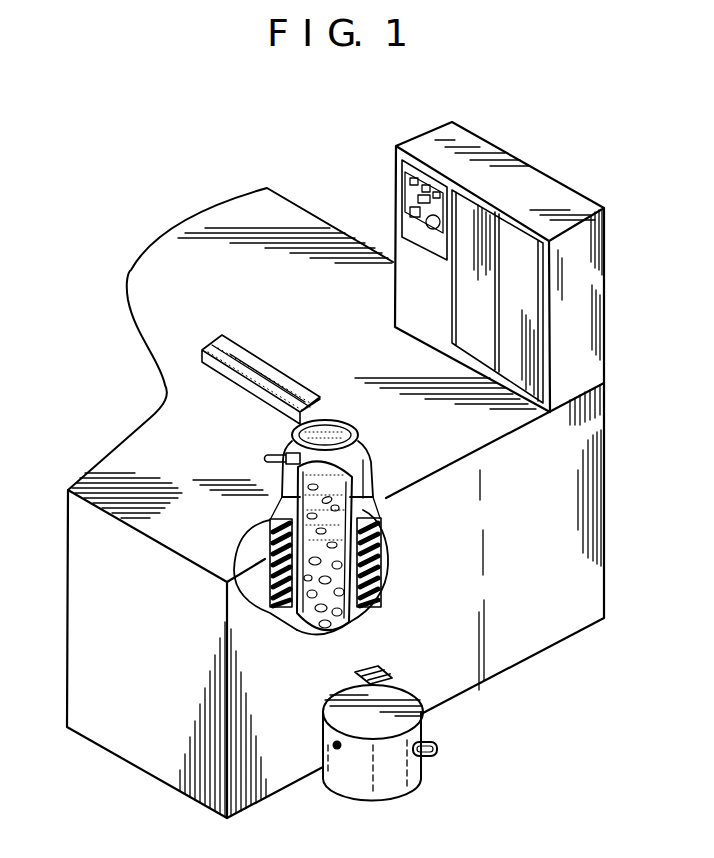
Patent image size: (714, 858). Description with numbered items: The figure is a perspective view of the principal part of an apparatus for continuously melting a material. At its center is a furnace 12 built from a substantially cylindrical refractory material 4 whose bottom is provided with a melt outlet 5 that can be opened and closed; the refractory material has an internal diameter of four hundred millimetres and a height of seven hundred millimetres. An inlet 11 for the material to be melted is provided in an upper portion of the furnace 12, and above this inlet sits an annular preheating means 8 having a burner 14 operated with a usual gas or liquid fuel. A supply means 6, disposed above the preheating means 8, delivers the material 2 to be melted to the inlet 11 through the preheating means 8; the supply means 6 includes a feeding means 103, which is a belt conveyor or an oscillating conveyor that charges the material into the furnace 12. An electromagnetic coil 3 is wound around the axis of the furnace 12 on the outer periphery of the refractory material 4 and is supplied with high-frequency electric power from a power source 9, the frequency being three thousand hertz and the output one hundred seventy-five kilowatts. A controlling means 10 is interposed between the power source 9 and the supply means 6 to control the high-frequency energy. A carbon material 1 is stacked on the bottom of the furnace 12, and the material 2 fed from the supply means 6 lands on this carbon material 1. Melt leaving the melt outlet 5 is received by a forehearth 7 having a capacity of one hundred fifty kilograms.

The carbon material 1 is at (277, 518).
The material 2 is at (282, 489).
The electromagnetic coil 3 is at (270, 553).
The refractory material 4 is at (283, 618).
The melt outlet 5 is at (380, 666).
The supply means 6 is at (250, 342).
The forehearth 7 is at (412, 763).
The annular preheating means 8 is at (527, 425).
The power source 9 is at (523, 290).
The controlling means 10 is at (405, 232).
The inlet 11 is at (347, 473).
The furnace 12 is at (383, 552).
The burner 14 is at (270, 455).
The feeding means 103 is at (222, 335).